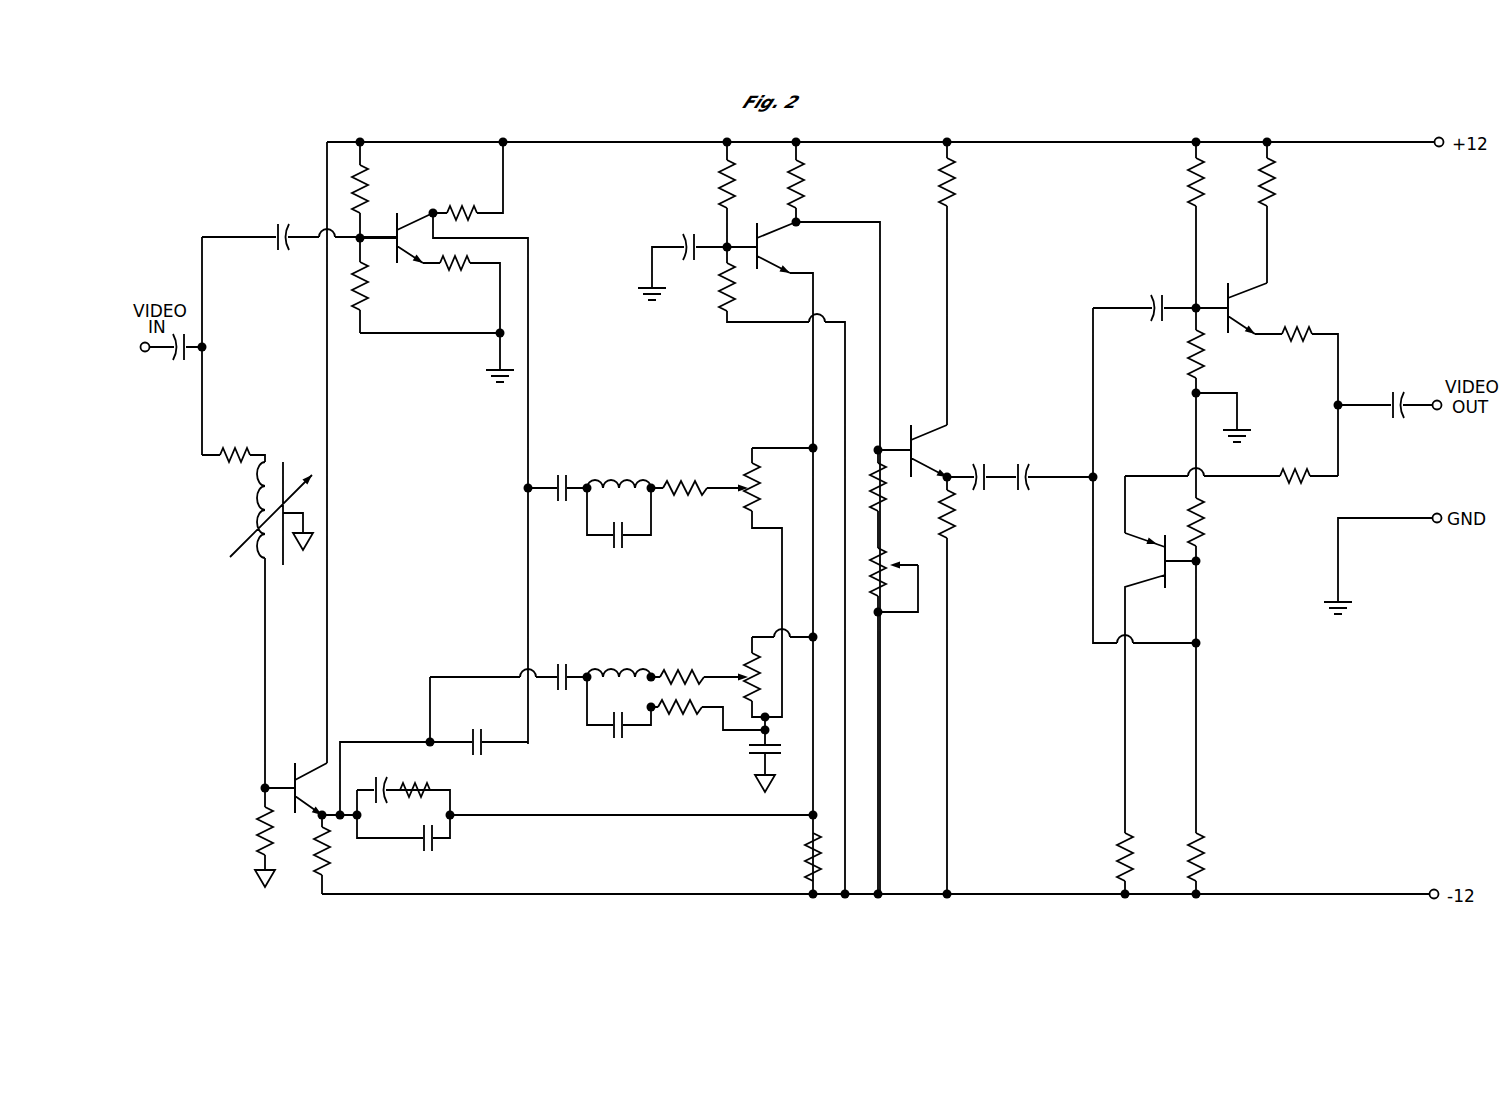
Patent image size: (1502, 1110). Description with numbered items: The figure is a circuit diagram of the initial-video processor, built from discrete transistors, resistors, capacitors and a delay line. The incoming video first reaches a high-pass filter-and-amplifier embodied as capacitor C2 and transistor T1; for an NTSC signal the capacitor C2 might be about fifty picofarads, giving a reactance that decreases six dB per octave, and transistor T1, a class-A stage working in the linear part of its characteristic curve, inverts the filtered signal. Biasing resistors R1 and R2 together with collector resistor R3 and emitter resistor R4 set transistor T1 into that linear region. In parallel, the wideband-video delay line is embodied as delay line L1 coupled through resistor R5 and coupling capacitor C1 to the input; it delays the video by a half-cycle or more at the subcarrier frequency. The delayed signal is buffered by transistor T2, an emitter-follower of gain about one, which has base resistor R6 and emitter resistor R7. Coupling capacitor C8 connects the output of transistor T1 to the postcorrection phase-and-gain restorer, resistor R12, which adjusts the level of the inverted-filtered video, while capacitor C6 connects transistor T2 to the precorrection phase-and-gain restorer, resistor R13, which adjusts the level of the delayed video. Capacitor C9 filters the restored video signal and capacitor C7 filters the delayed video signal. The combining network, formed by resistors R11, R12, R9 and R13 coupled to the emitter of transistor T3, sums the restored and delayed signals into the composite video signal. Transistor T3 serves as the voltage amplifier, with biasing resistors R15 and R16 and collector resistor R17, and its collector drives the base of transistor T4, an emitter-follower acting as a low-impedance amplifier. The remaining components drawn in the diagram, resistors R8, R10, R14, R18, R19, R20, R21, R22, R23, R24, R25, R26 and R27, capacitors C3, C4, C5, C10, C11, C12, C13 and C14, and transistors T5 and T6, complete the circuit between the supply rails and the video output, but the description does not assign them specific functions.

The biasing resistor R1 is at (372, 189).
The biasing resistor R2 is at (372, 286).
The collector resistor R3 is at (462, 202).
The emitter resistor R4 is at (458, 275).
The resistor R5 is at (235, 444).
The base resistor R6 is at (276, 831).
The emitter resistor R7 is at (334, 851).
The resistor R8 is at (415, 779).
The resistor R9 is at (682, 666).
The resistor R10 is at (680, 719).
The resistor R11 is at (685, 477).
The resistor R12 is at (769, 487).
The resistor R13 is at (736, 675).
The variable resistor R14 is at (895, 529).
The biasing resistor R15 is at (744, 184).
The biasing resistor R16 is at (743, 287).
The collector resistor R17 is at (813, 184).
The resistor R18 is at (965, 182).
The resistor R19 is at (963, 514).
The resistor R20 is at (1213, 182).
The resistor R21 is at (1284, 182).
The resistor R22 is at (1178, 354).
The resistor R23 is at (1298, 322).
The resistor R24 is at (1296, 488).
The resistor R25 is at (1213, 522).
The resistor R26 is at (1212, 857).
The resistor R27 is at (1141, 857).
The coupling capacitor C1 is at (176, 361).
The capacitor C2 is at (283, 223).
The capacitor C3 is at (479, 728).
The capacitor C4 is at (381, 778).
The capacitor C5 is at (429, 849).
The capacitor C6 is at (564, 663).
The capacitor C7 is at (614, 740).
The coupling capacitor C8 is at (564, 472).
The capacitor C9 is at (617, 552).
The capacitor C10 is at (689, 231).
The capacitor C11 is at (982, 459).
The capacitor C12 is at (1024, 459).
The capacitor C13 is at (1160, 292).
The capacitor C14 is at (1397, 388).
The delay line L1 is at (259, 513).
The transistor T1 is at (411, 238).
The transistor T2 is at (308, 788).
The transistor T3 is at (771, 246).
The transistor T4 is at (926, 451).
The transistor T5 is at (1244, 308).
The transistor T6 is at (1150, 561).